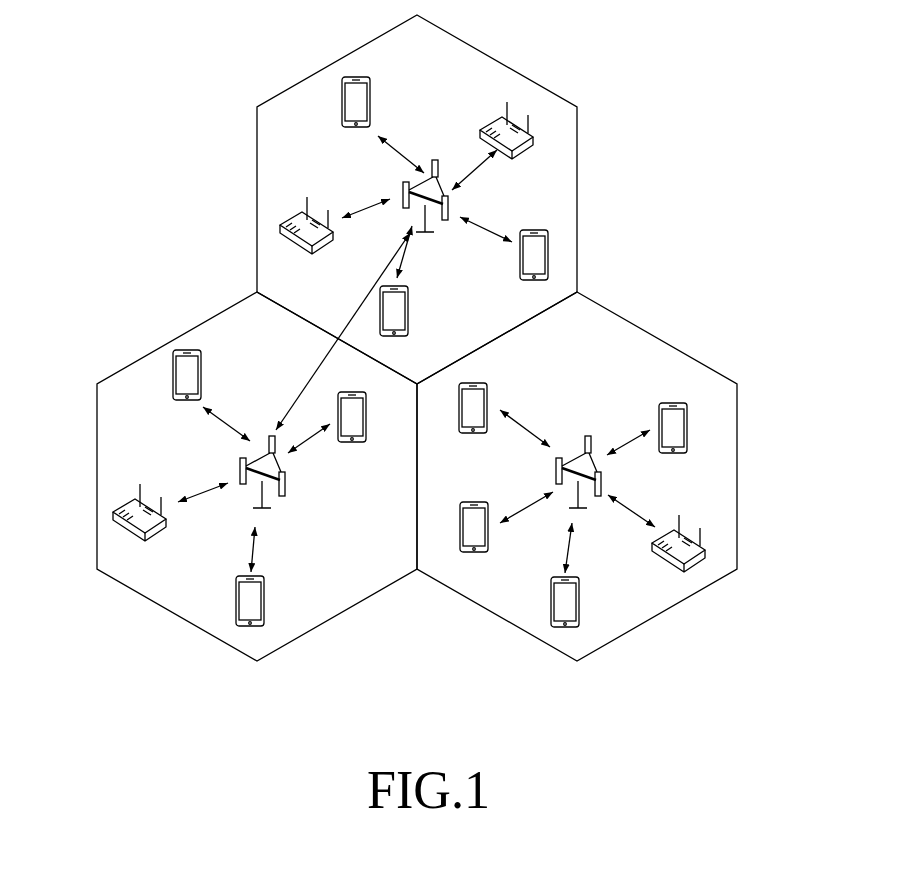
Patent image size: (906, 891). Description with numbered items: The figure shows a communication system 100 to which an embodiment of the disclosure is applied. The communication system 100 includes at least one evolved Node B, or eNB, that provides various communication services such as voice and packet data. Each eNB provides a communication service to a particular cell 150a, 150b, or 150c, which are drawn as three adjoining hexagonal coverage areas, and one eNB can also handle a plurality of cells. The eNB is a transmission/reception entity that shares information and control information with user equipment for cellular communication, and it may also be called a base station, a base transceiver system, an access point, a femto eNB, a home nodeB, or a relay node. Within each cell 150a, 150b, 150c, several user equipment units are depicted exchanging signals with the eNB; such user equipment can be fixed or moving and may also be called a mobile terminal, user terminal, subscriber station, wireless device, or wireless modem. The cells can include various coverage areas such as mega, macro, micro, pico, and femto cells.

The communication system 100 is at (190, 35).
The cell 150a is at (578, 197).
The cell 150b is at (738, 478).
The cell 150c is at (96, 478).